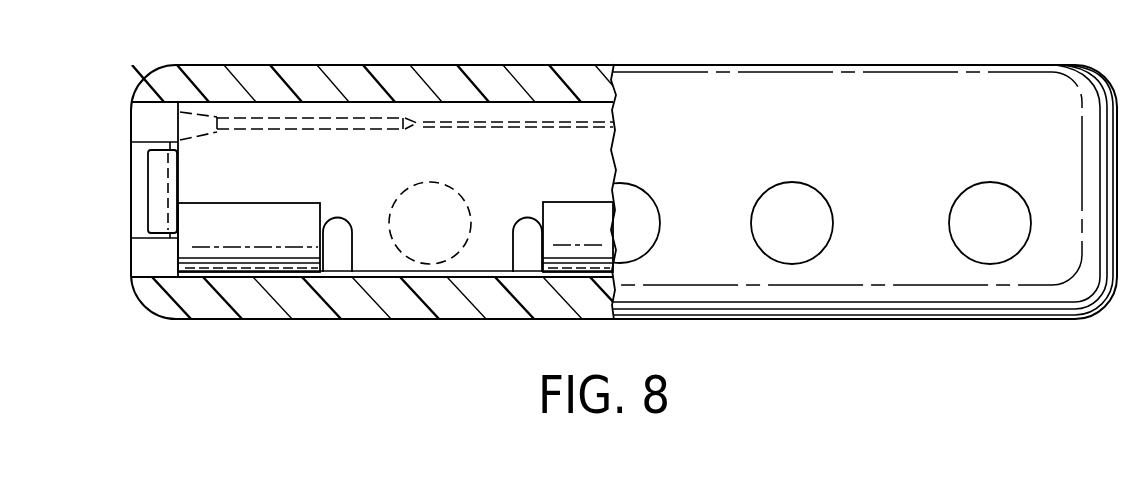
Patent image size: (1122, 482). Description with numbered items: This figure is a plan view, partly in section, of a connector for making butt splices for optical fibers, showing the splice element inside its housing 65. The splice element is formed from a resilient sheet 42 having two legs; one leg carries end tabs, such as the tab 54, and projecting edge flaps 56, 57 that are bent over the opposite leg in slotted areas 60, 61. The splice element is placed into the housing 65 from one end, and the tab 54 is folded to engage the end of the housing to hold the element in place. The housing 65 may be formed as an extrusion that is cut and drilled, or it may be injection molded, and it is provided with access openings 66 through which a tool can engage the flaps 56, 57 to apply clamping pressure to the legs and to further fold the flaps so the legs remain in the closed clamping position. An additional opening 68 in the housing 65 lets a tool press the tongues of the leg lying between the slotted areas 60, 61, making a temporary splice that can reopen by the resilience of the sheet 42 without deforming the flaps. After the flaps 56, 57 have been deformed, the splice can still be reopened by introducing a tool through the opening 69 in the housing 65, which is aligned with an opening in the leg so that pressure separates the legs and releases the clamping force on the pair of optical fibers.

The sheet 42 is at (153, 175).
The end tab 54 is at (155, 194).
The projecting edge flap 56 is at (290, 217).
The projecting edge flap 57 is at (573, 210).
The slotted area 60 is at (352, 224).
The slotted area 61 is at (516, 218).
The housing 65 is at (786, 70).
The access opening 66 is at (648, 204).
The additional opening 68 is at (814, 194).
The opening 69 is at (450, 185).